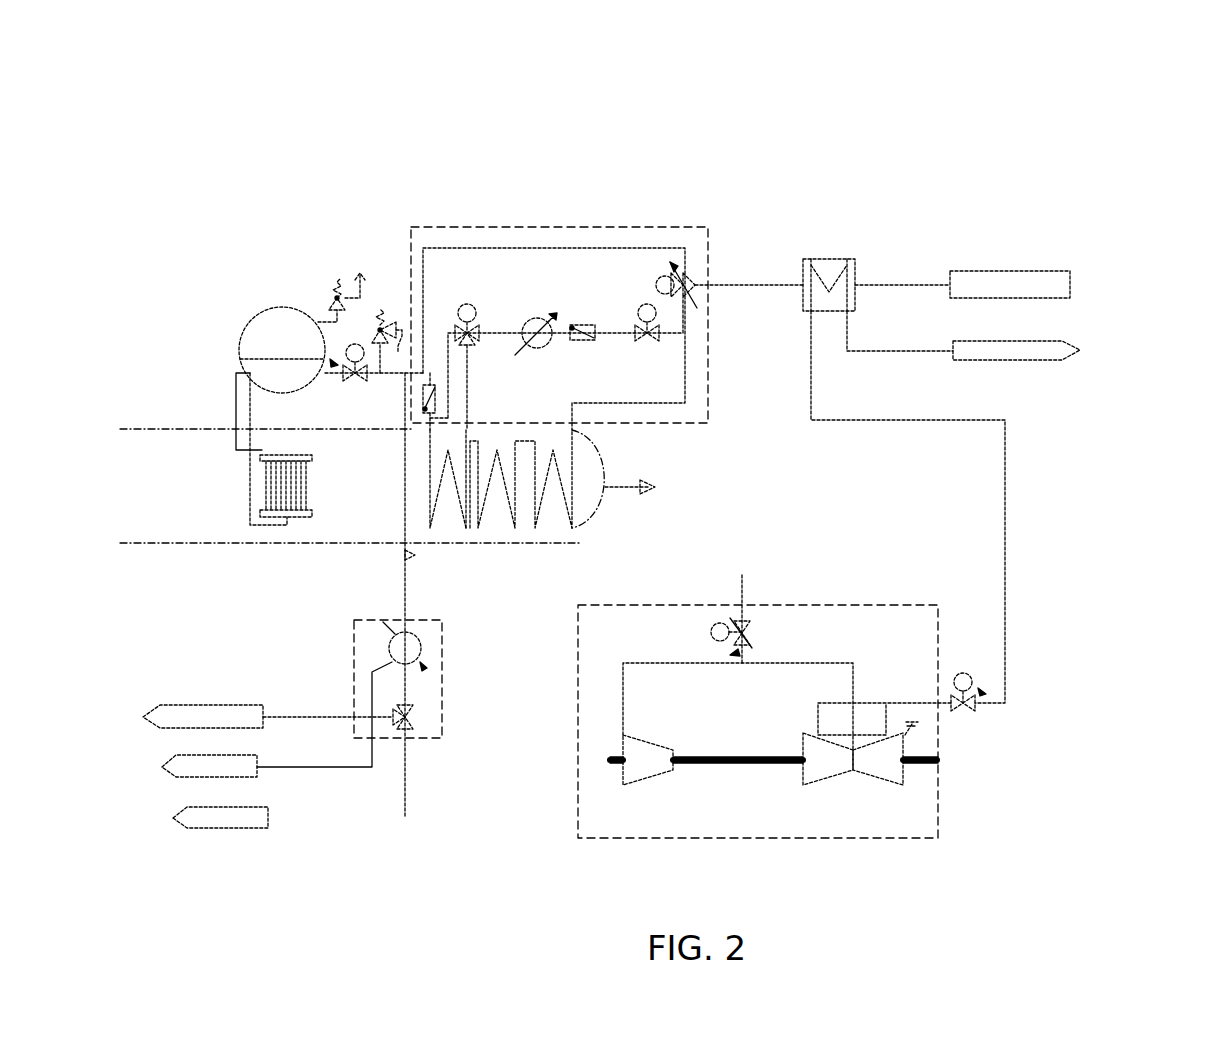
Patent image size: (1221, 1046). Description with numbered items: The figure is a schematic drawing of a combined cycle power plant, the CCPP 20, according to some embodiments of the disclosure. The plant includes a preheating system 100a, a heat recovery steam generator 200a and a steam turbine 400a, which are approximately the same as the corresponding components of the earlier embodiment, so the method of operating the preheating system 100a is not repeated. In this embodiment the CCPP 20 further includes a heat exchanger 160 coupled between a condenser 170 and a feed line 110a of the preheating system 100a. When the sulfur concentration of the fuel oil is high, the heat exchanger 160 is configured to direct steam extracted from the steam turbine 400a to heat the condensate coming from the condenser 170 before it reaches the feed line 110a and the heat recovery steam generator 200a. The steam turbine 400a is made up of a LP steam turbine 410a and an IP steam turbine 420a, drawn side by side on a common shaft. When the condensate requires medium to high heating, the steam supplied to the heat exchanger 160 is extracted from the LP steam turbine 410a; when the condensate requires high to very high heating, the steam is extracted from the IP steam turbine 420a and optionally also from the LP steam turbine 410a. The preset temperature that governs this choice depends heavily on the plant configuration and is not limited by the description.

The CCPP 20 is at (1157, 118).
The preheating system 100a is at (652, 226).
The feed line 110a is at (672, 405).
The heat exchanger 160 is at (829, 259).
The condenser 170 is at (1017, 271).
The heat recovery steam generator 200a is at (560, 538).
The steam turbine 400a is at (852, 605).
The LP steam turbine 410a is at (823, 740).
The IP steam turbine 420a is at (637, 737).